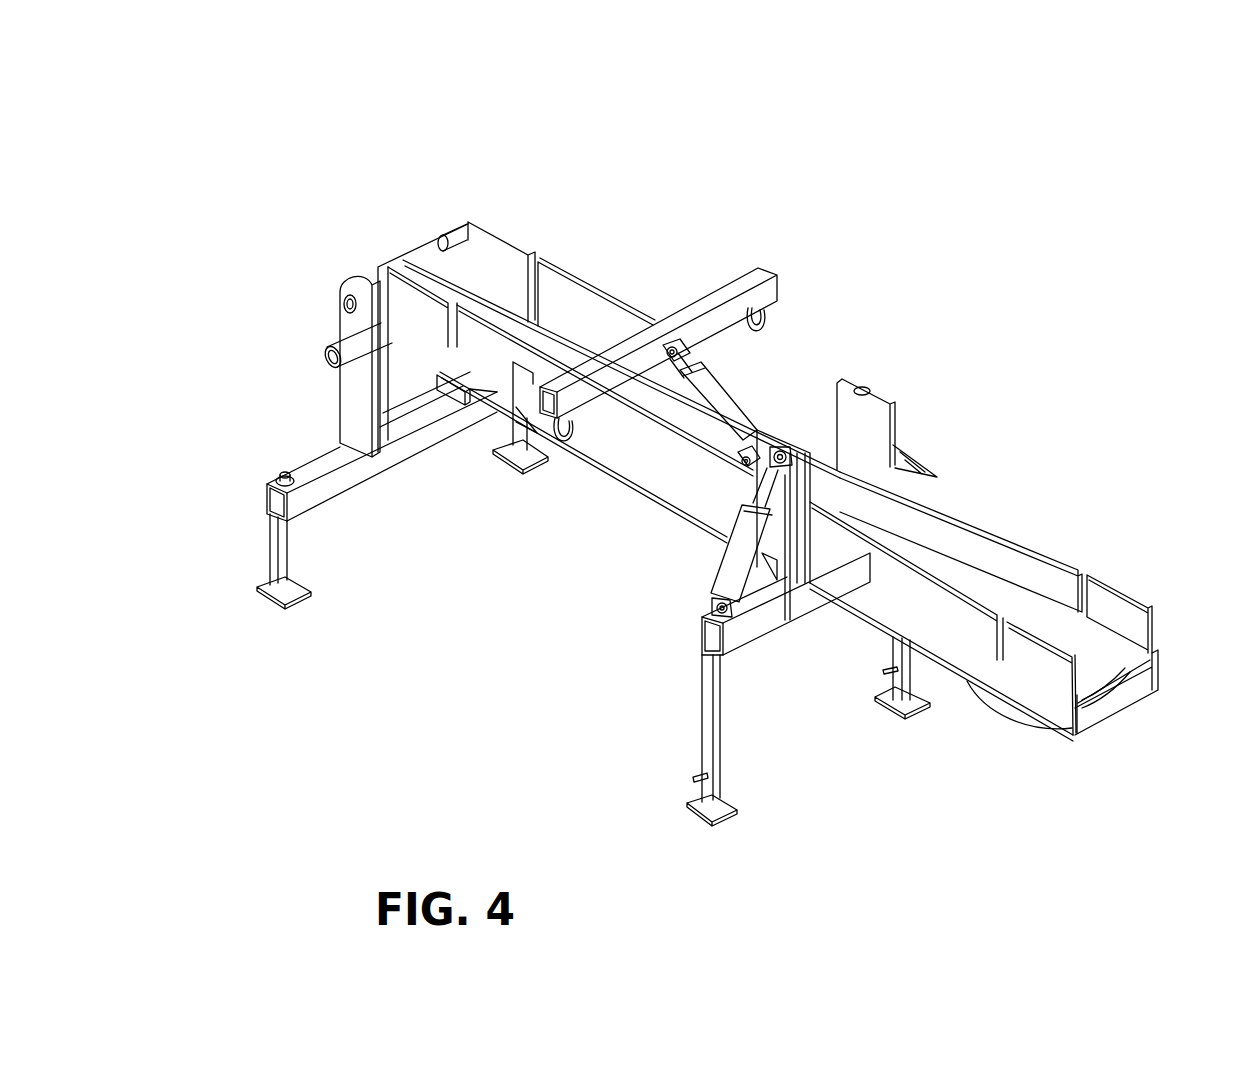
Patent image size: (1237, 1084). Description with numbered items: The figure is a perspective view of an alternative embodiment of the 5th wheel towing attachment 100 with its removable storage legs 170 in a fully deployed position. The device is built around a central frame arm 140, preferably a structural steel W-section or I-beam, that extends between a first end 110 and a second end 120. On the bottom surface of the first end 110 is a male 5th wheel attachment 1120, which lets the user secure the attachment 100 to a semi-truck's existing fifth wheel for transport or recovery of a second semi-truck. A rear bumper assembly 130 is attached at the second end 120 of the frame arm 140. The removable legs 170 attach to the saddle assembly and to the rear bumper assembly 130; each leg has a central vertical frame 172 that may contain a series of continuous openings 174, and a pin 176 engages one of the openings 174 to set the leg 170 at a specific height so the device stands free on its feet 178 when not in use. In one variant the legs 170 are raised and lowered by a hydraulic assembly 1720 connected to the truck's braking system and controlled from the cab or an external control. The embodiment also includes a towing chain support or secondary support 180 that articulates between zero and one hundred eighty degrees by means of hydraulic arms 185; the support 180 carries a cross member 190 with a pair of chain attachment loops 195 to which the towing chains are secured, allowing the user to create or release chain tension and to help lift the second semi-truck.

The 5th wheel towing attachment 100 is at (992, 226).
The first end 110 is at (1122, 728).
The second end 120 is at (355, 250).
The rear bumper assembly 130 is at (317, 433).
The central frame arm 140 is at (907, 540).
The removable storage legs 170 is at (701, 716).
The central vertical frame 172 is at (718, 710).
The continuous openings 174 is at (288, 548).
The pin 176 is at (700, 778).
The feet 178 is at (727, 813).
The towing chain support/secondary support 180 is at (659, 312).
The hydraulic arms 185 is at (700, 408).
The cross member 190 is at (723, 287).
The chain attachment loops 195 is at (773, 327).
The male 5th wheel attachment 1120 is at (1003, 707).
The hydraulic assembly 1720 is at (713, 577).